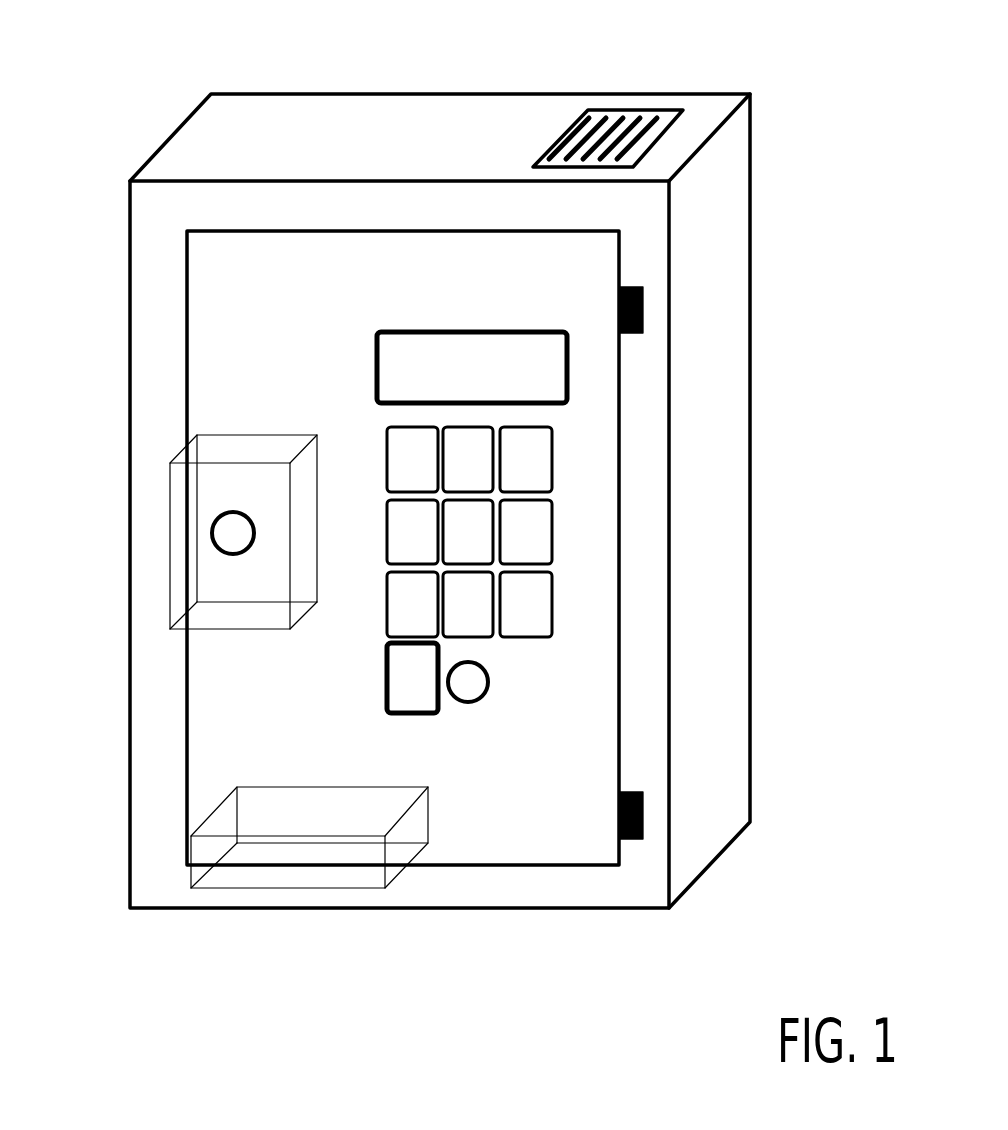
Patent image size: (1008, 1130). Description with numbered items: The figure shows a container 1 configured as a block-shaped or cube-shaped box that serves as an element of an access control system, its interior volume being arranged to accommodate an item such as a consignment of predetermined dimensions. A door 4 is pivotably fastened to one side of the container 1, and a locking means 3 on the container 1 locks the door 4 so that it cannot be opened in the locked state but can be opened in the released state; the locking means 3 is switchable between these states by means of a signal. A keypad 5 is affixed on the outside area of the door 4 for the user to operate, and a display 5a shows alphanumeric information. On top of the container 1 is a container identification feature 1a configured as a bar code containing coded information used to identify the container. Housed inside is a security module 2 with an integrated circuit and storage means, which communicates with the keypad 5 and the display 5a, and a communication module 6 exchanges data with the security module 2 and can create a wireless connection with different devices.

The container 1 is at (140, 96).
The container identification feature 1a is at (638, 114).
The security module 2 is at (260, 889).
The locking means 3 is at (212, 528).
The door 4 is at (595, 552).
The keypad 5 is at (552, 442).
The display 5a is at (377, 350).
The communication module 6 is at (490, 680).